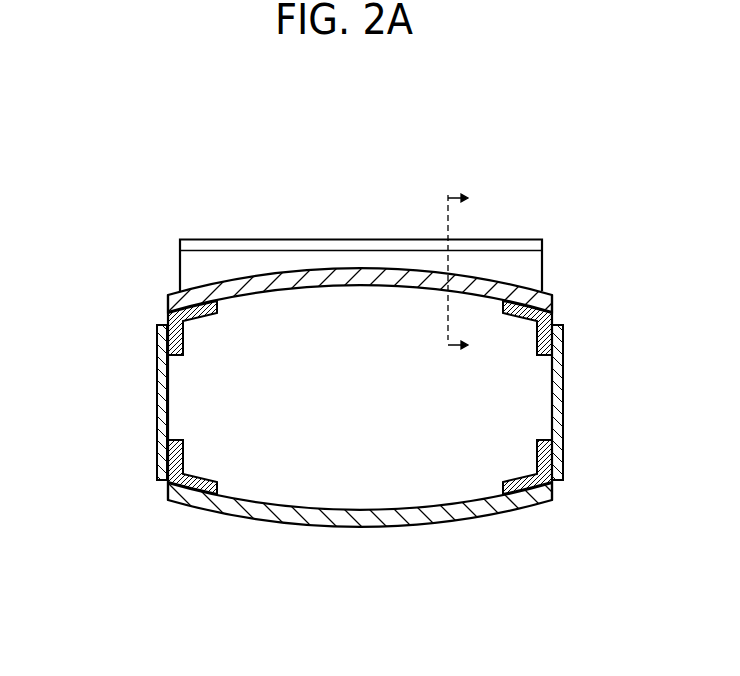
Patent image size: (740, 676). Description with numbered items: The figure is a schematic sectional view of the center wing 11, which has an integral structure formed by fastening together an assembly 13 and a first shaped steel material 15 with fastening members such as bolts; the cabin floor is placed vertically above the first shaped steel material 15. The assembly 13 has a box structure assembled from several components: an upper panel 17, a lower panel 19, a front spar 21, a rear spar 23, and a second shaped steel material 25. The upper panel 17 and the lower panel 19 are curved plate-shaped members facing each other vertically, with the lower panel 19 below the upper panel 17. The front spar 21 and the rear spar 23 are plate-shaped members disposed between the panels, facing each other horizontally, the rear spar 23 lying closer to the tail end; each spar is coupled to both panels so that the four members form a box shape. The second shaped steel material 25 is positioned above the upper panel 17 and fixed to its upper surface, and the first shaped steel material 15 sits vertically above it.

The center wing 11 is at (383, 139).
The assembly 13 is at (130, 269).
The first shaped steel material 15 is at (543, 245).
The upper panel 17 is at (202, 283).
The lower panel 19 is at (424, 527).
The front spar 21 is at (155, 404).
The rear spar 23 is at (563, 402).
The second shaped steel material 25 is at (543, 271).